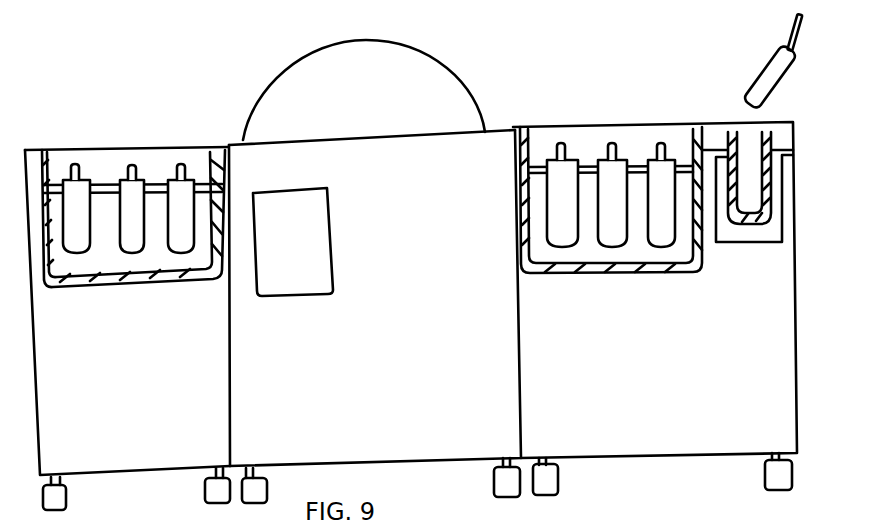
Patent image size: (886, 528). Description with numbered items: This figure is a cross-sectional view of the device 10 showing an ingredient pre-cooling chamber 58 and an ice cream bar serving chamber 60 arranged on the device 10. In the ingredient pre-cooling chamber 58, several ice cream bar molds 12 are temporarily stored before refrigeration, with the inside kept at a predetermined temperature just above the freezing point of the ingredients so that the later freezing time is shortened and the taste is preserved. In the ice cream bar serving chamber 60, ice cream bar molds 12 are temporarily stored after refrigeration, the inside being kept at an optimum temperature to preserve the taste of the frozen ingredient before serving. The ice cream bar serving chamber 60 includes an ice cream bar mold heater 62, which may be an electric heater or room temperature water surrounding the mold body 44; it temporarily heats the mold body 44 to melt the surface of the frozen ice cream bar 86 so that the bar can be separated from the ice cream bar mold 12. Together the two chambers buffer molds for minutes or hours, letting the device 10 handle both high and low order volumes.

The device 10 is at (503, 130).
The ice cream bar mold 12 is at (93, 207).
The ingredient pre-cooling chamber 58 is at (50, 163).
The ice cream bar serving chamber 60 is at (530, 143).
The mold body 44 is at (795, 170).
The ice cream bar mold heater 62 is at (795, 195).
The frozen ice cream bar 86 is at (791, 79).